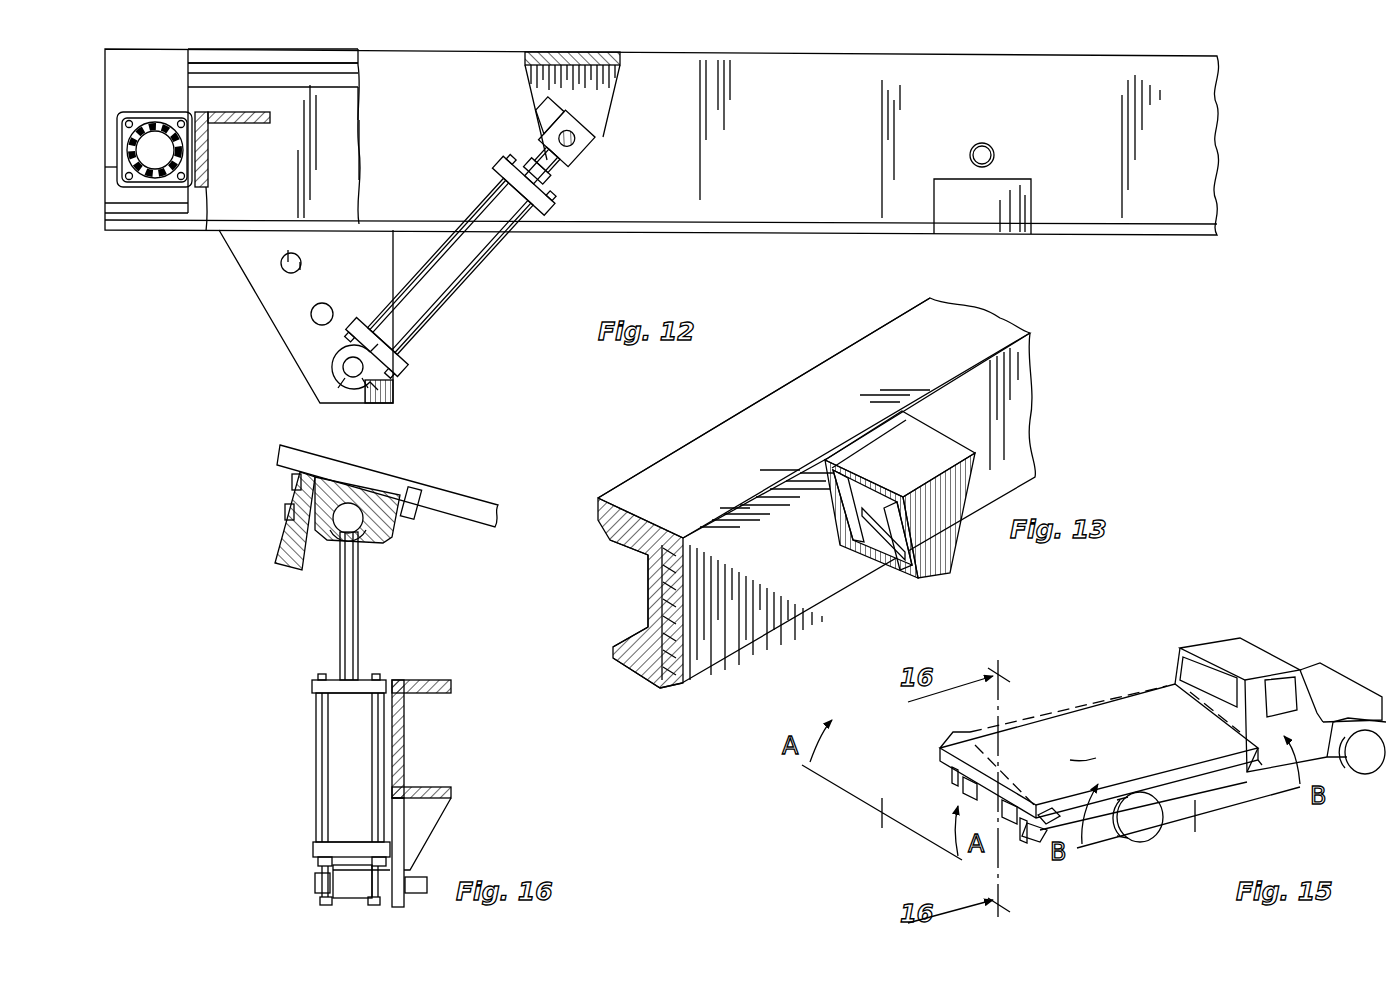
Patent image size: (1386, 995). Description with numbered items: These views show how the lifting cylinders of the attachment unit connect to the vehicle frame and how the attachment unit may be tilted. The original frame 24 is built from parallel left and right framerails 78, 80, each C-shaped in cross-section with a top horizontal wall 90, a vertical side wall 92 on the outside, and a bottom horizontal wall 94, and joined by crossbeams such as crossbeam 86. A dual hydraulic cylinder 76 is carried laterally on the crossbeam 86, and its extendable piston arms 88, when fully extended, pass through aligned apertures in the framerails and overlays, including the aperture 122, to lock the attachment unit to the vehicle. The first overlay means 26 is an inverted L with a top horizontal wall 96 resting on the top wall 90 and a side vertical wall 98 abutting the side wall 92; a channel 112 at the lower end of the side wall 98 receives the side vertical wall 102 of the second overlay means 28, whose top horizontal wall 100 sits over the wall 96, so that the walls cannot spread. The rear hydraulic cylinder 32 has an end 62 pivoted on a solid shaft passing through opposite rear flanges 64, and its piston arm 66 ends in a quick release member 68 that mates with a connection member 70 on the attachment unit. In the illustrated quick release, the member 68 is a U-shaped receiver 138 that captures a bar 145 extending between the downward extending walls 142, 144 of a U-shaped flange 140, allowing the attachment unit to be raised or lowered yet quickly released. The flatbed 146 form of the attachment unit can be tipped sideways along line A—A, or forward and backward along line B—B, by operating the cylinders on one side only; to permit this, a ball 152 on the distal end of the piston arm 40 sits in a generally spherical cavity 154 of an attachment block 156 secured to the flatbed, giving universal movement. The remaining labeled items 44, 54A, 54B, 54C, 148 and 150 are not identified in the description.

In FIG. 12, the original frame 24 is at (318, 76).
In FIG. 12, the first overlay means 26 is at (238, 64).
In FIG. 13, the first overlay means 26 is at (665, 692).
In FIG. 12, the second overlay means 28 is at (216, 46).
In FIG. 13, the second overlay means 28 is at (734, 656).
In FIG. 12, the rear hydraulic cylinder 32 is at (434, 340).
In FIG. 16, the rear hydraulic cylinder 32 is at (314, 727).
In FIG. 13, the piston arm 40 is at (630, 552).
In FIG. 16, the piston arm 40 is at (340, 632).
In FIG. 13, the lower flange 44 is at (614, 652).
In FIG. 12, the pivot pin 54A is at (301, 263).
In FIG. 12, the pivot pin 54B is at (334, 313).
In FIG. 12, the pivot pin 54C is at (348, 342).
In FIG. 12, the end 62 is at (364, 380).
In FIG. 12, the rear flange 64 is at (298, 345).
In FIG. 12, the piston arm 66 is at (550, 218).
In FIG. 12, the quick release member 68 is at (548, 183).
In FIG. 12, the connection member 70 is at (606, 54).
In FIG. 13, the connection member 70 is at (926, 414).
In FIG. 12, the dual hydraulic cylinder 76 is at (150, 114).
In FIG. 13, the left framerail 78 is at (644, 597).
In FIG. 12, the right framerail 80 is at (338, 86).
In FIG. 16, the right framerail 80 is at (422, 680).
In FIG. 12, the crossbeam 86 is at (216, 190).
In FIG. 12, the extendable piston arm 88 is at (982, 144).
In FIG. 12, the top horizontal wall 90 is at (340, 96).
In FIG. 12, the vertical side wall 92 is at (343, 133).
In FIG. 13, the vertical side wall 92 is at (646, 620).
In FIG. 12, the bottom horizontal wall 94 is at (340, 222).
In FIG. 12, the top horizontal wall 96 is at (364, 70).
In FIG. 13, the top horizontal wall 96 is at (600, 520).
In FIG. 13, the side vertical wall 98 is at (680, 690).
In FIG. 12, the top horizontal wall 100 is at (366, 74).
In FIG. 13, the top horizontal wall 100 is at (650, 474).
In FIG. 13, the side vertical wall 102 is at (776, 630).
In FIG. 12, the channel 112 is at (992, 226).
In FIG. 12, the aperture 122 is at (974, 146).
In FIG. 12, the U-shaped receiver 138 is at (588, 184).
In FIG. 12, the U-shaped flange 140 is at (604, 96).
In FIG. 13, the U-shaped flange 140 is at (958, 430).
In FIG. 12, the downward extending wall 142 is at (606, 126).
In FIG. 13, the downward extending wall 142 is at (848, 542).
In FIG. 13, the downward extending wall 144 is at (920, 580).
In FIG. 12, the bar 145 is at (606, 140).
In FIG. 13, the bar 145 is at (882, 530).
In FIG. 16, the flatbed 146 is at (432, 486).
In FIG. 15, the flatbed 146 is at (1099, 751).
In FIG. 15, the platform frame 148 is at (862, 794).
In FIG. 15, the truck 150 is at (1096, 850).
In FIG. 16, the ball 152 is at (325, 540).
In FIG. 16, the spherical cavity 154 is at (343, 530).
In FIG. 16, the attachment block 156 is at (358, 490).